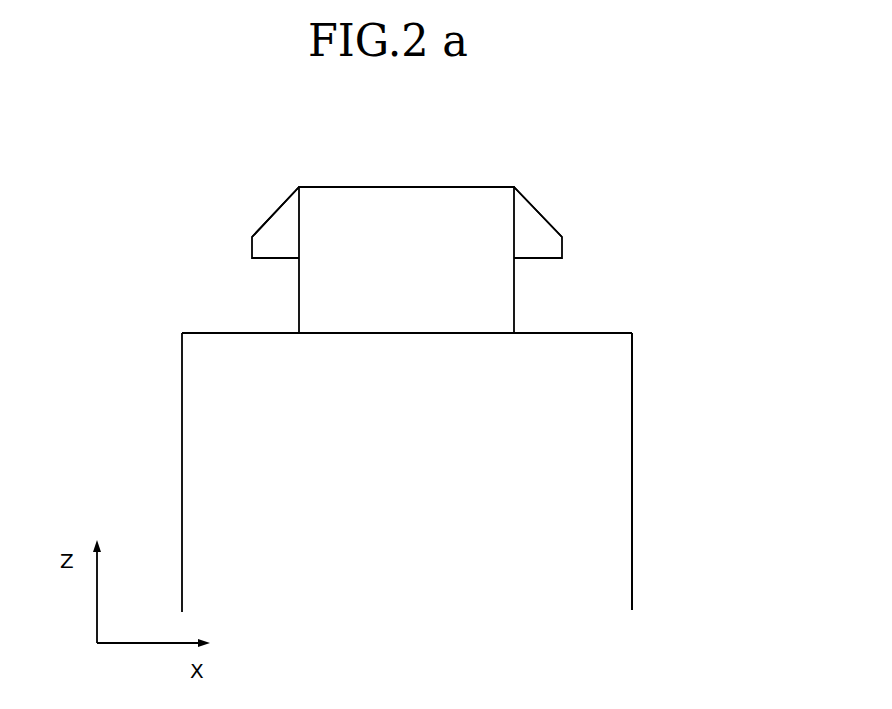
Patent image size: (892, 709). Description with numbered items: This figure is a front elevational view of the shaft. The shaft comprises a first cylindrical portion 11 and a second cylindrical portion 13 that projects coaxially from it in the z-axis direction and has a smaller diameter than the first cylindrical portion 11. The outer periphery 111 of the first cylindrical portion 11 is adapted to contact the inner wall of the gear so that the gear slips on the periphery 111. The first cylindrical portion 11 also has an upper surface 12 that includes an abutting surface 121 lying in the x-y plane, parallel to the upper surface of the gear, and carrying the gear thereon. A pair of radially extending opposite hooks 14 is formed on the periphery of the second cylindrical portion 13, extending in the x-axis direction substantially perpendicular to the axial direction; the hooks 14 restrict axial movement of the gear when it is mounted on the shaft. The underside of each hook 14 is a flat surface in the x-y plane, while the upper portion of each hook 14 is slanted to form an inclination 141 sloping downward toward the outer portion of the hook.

The first cylindrical portion 11 is at (620, 435).
The outer periphery 111 is at (633, 510).
The upper surface 12 is at (203, 333).
The abutting surface 121 is at (263, 333).
The second cylindrical portion 13 is at (495, 295).
The hooks 14 is at (250, 237).
The inclination 141 is at (272, 212).